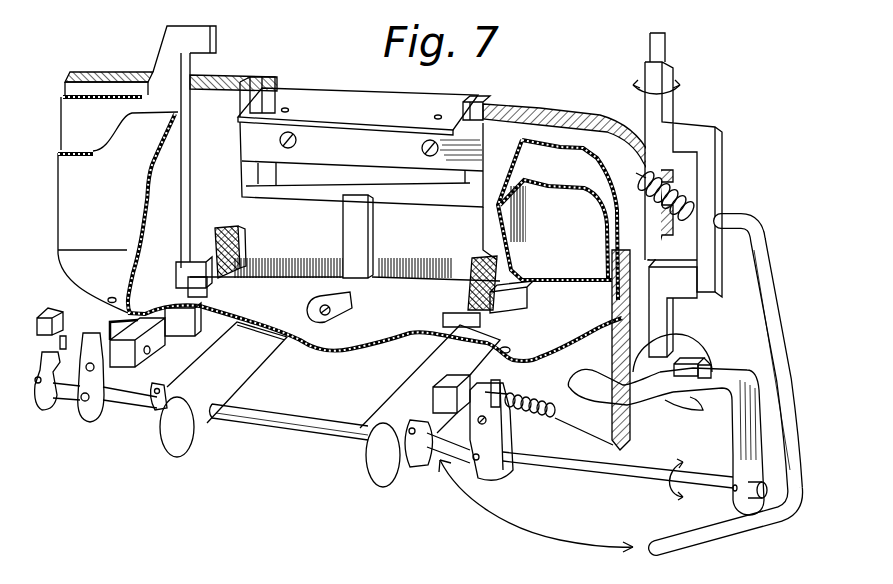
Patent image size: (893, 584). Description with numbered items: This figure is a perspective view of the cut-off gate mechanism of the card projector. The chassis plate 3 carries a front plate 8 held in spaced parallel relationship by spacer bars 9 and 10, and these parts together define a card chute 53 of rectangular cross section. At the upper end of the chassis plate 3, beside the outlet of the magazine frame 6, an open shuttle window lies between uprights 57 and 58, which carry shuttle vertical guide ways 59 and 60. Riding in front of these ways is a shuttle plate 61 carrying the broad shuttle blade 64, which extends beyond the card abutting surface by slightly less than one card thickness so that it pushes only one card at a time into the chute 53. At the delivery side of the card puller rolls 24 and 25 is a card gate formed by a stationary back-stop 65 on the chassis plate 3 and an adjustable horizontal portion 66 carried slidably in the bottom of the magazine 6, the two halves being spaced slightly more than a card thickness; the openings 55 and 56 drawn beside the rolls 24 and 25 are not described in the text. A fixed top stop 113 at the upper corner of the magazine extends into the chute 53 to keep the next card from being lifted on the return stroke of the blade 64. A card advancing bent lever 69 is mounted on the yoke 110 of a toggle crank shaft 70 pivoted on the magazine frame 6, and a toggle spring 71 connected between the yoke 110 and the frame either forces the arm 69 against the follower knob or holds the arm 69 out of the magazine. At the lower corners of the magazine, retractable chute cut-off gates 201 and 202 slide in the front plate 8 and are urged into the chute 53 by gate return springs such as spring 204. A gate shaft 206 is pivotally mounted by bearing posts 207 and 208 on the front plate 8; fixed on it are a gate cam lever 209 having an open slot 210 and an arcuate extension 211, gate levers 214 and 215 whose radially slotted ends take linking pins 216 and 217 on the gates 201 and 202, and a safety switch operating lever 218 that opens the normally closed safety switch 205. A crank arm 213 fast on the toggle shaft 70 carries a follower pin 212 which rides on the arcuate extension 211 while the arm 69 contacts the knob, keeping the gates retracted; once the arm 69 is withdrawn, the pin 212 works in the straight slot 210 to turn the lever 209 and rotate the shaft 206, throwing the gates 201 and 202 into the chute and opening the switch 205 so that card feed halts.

The chassis plate 3 is at (623, 285).
The magazine frame 6 is at (167, 185).
The front plate 8 is at (372, 403).
The spacer bar 9 is at (182, 117).
The spacer bar 10 is at (600, 172).
The card puller roll 24 is at (235, 252).
The card puller roll 25 is at (473, 272).
The card chute 53 is at (298, 279).
The slot 55 is at (213, 288).
The slot 56 is at (447, 313).
The upright 57 is at (186, 78).
The upright 58 is at (557, 117).
The shuttle vertical guide way 59 is at (283, 86).
The shuttle vertical guide way 60 is at (480, 104).
The shuttle plate 61 is at (408, 170).
The shuttle blade 64 is at (420, 98).
The stationary card back-stop 65 is at (360, 237).
The adjustable horizontal portion 66 is at (343, 300).
The card advancing bent lever 69 is at (772, 300).
The toggle crank shaft 70 is at (710, 303).
The toggle spring 71 is at (673, 223).
The yoke 110 is at (707, 163).
The fixed top stop 113 is at (217, 42).
The retractable chute cut-off gate 201 is at (182, 263).
The retractable chute cut-off gate 202 is at (520, 291).
The gate return spring 204 is at (533, 408).
The safety switch 205 is at (60, 343).
The gate shaft 206 is at (610, 477).
The bearing post 207 is at (197, 440).
The bearing post 208 is at (366, 453).
The gate cam lever 209 is at (731, 452).
The open slot 210 is at (713, 367).
The arcuate extension 211 is at (607, 376).
The follower pin 212 is at (703, 366).
The crank arm 213 is at (670, 406).
The gate lever 214 is at (110, 367).
The gate lever 215 is at (513, 430).
The linking pin 216 is at (82, 340).
The linking pin 217 is at (507, 397).
The safety switch operating lever 218 is at (43, 402).